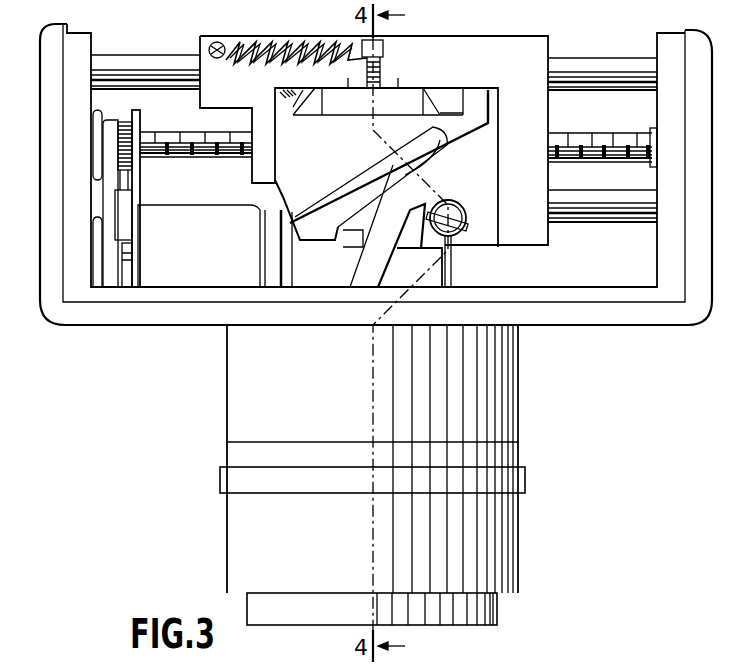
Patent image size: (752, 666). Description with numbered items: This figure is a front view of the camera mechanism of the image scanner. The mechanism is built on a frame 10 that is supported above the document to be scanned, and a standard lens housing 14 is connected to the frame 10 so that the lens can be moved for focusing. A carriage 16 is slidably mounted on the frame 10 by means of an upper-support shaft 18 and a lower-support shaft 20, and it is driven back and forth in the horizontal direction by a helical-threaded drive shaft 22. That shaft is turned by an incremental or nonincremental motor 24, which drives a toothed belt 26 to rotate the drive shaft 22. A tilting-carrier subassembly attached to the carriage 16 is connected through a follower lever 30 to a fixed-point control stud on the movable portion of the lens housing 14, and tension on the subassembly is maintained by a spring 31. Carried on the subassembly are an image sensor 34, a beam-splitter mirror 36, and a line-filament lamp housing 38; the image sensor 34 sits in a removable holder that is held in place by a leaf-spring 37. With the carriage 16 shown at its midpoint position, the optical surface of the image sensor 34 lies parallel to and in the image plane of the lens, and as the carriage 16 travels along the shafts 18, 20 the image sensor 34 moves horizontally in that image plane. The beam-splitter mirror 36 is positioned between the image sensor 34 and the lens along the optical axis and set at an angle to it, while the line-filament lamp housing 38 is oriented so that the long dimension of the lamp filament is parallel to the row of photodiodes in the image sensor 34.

The frame 10 is at (712, 289).
The lens housing 14 is at (507, 543).
The carriage 16 is at (509, 43).
The upper-support shaft 18 is at (142, 64).
The lower-support shaft 20 is at (580, 222).
The helical-threaded drive shaft 22 is at (173, 150).
The motor 24 is at (222, 217).
The toothed belt 26 is at (103, 188).
The follower lever 30 is at (380, 263).
The spring 31 is at (277, 38).
The image sensor 34 is at (398, 83).
The beam-splitter mirror 36 is at (330, 232).
The leaf-spring 37 is at (312, 107).
The line-filament lamp housing 38 is at (452, 248).